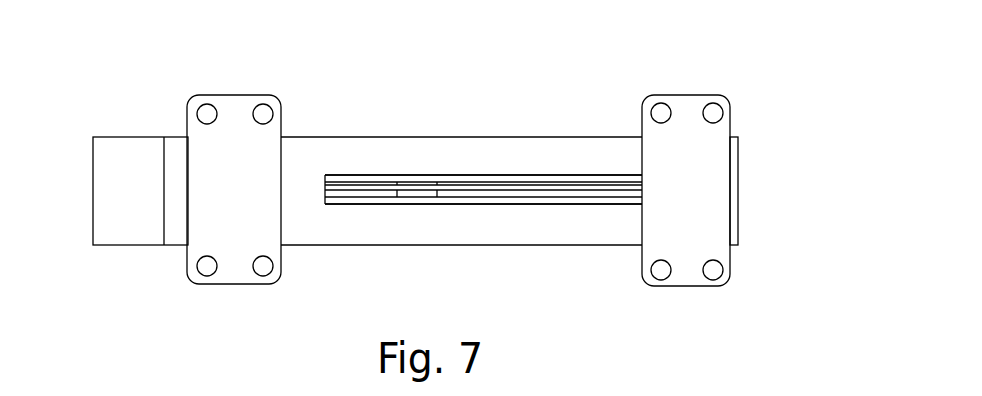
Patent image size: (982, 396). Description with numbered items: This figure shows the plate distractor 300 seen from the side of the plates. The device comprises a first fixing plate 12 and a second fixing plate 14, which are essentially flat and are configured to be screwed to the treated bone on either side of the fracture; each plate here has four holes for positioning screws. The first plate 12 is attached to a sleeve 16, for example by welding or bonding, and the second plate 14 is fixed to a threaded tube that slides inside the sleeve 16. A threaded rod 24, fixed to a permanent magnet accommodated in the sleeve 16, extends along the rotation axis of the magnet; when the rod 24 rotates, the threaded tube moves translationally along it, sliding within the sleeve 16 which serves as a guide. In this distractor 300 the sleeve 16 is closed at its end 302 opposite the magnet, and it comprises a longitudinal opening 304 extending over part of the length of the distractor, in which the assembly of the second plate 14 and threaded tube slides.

The first fixing plate 12 is at (232, 127).
The second fixing plate 14 is at (685, 103).
The sleeve 16 is at (377, 232).
The threaded rod 24 is at (536, 177).
The plate distractor 300 is at (437, 106).
The end of the sleeve 302 is at (740, 216).
The longitudinal opening 304 is at (522, 200).